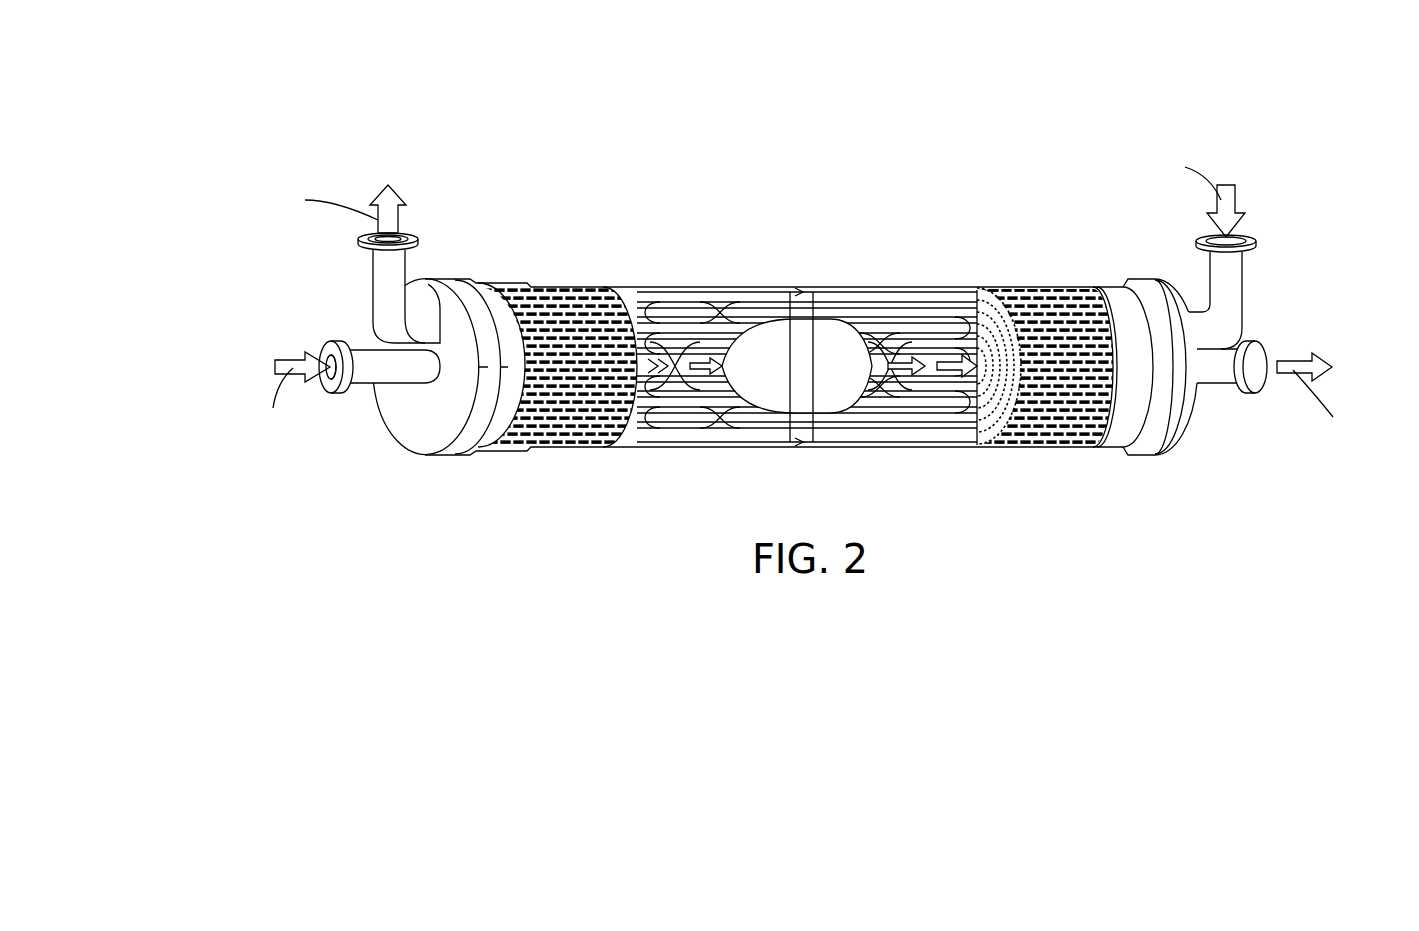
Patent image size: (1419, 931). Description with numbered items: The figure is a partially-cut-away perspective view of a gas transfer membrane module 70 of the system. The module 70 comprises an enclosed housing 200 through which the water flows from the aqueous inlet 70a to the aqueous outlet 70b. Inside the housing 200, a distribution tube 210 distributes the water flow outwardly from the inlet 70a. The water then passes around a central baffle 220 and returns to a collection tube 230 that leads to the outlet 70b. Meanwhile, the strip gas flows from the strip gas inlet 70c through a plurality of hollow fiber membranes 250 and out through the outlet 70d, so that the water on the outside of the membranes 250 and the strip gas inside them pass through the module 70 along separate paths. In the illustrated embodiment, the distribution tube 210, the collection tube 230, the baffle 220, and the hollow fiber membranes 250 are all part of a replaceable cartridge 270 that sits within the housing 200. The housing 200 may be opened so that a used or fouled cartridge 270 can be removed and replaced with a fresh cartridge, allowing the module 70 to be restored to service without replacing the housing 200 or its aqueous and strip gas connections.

The module 70 is at (683, 99).
The aqueous inlet 70a is at (353, 383).
The aqueous outlet 70b is at (1263, 387).
The strip gas inlet 70c is at (1247, 231).
The outlet 70d is at (412, 232).
The housing 200 is at (1105, 307).
The distribution tube 210 is at (767, 370).
The central baffle 220 is at (807, 327).
The collection tube 230 is at (838, 367).
The hollow fiber membranes 250 is at (748, 293).
The replaceable cartridge 270 is at (562, 305).